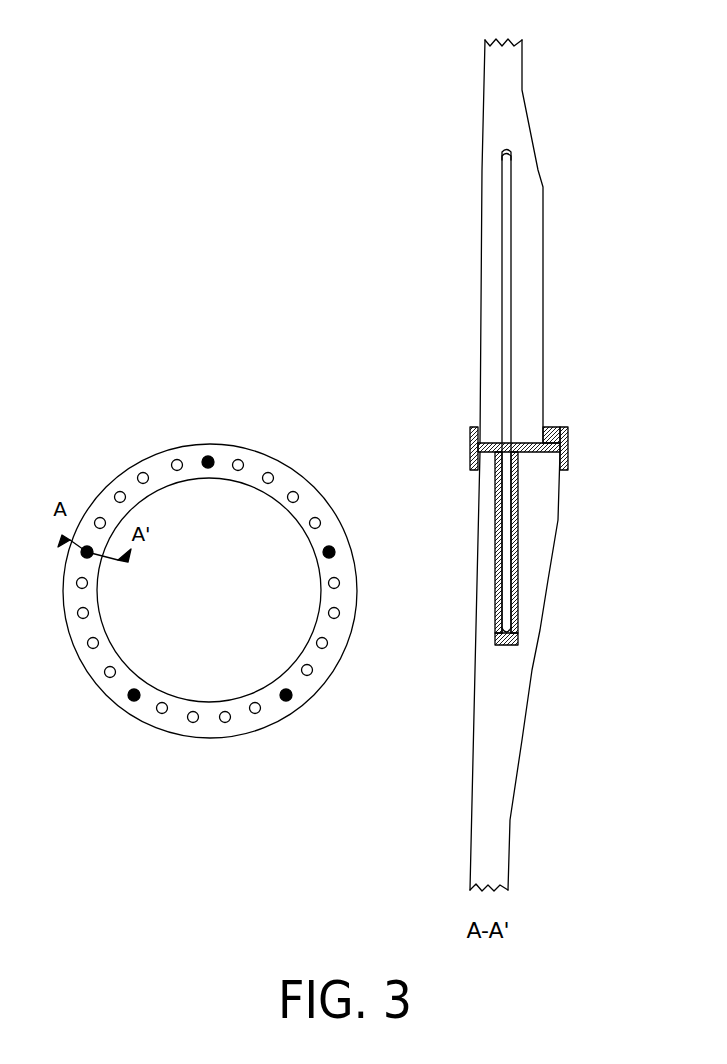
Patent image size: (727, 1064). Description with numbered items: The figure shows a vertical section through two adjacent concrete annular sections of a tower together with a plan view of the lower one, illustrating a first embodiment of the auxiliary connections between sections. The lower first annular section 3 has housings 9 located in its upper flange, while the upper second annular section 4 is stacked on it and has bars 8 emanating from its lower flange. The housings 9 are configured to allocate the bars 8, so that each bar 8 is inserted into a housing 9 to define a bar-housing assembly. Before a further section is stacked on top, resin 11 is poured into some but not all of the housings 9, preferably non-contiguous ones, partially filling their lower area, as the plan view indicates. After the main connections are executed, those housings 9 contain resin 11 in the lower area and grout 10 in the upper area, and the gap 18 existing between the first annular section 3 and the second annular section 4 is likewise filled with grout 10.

The first annular section 3 is at (323, 532).
The second annular section 4 is at (535, 207).
The bars 8 is at (508, 290).
The housings 9 is at (145, 478).
The grout 10 is at (555, 428).
The resin 11 is at (208, 462).
The gap 18 is at (490, 437).